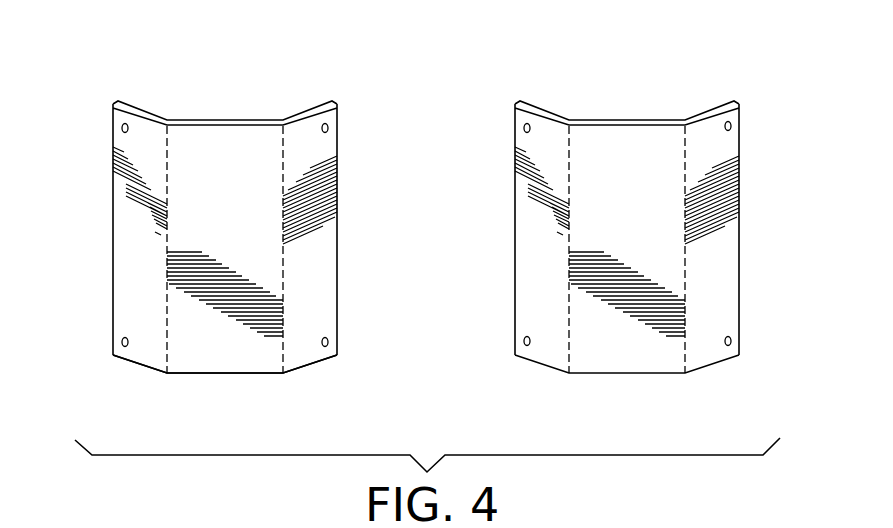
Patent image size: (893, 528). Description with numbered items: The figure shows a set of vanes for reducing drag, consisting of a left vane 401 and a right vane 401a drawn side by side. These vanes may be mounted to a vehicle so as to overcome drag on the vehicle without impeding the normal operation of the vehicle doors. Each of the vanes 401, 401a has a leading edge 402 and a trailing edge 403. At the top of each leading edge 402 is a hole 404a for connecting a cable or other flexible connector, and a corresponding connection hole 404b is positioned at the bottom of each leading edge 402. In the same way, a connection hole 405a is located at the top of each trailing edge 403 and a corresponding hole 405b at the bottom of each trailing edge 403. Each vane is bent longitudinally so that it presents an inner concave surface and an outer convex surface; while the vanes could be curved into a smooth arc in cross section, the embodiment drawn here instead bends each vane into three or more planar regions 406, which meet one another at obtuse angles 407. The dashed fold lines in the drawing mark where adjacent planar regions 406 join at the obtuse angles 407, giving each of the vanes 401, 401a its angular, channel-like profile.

The left vane 401 is at (226, 94).
The right vane 401a is at (625, 94).
The leading edge 402 is at (113, 214).
The trailing edge 403 is at (514, 200).
The hole 404a is at (122, 128).
The connection hole 404b is at (122, 342).
The connection hole 405a is at (515, 127).
The hole 405b is at (515, 340).
The planar regions 406 is at (157, 358).
The obtuse angles 407 is at (283, 250).